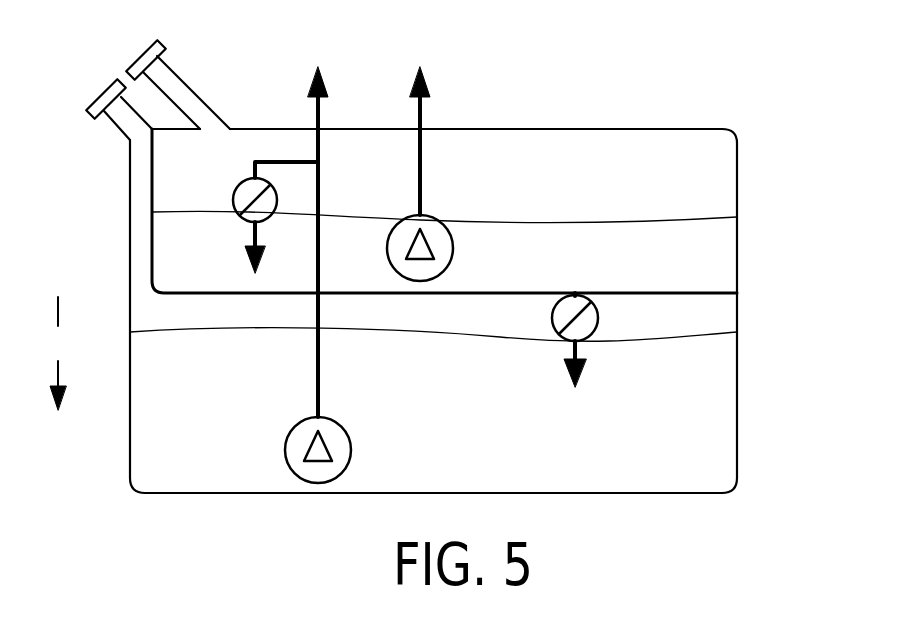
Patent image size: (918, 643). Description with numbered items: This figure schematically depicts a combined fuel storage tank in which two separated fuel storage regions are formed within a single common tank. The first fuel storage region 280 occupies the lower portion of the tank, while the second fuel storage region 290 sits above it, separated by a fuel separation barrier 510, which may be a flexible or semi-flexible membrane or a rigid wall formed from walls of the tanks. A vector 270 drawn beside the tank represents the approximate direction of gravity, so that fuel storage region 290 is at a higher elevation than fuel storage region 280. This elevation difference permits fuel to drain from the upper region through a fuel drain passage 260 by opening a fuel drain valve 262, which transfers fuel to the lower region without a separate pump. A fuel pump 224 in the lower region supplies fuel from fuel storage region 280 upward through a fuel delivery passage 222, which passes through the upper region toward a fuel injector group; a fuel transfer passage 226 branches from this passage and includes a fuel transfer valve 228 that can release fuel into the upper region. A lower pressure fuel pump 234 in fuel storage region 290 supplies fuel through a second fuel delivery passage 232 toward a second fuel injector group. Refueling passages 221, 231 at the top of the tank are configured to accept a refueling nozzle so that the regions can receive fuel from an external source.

The second fuel storage region 290 is at (444, 211).
The first fuel storage region 280 is at (433, 385).
The refueling passage 221 is at (128, 123).
The refueling passage 231 is at (168, 78).
The fuel delivery passage 222 is at (330, 114).
The fuel pump 224 is at (310, 483).
The fuel transfer passage 226 is at (292, 158).
The fuel transfer valve 228 is at (238, 178).
The second fuel delivery passage 232 is at (432, 114).
The lower pressure fuel pump 234 is at (449, 231).
The fuel drain valve 262 is at (591, 306).
The fuel separation barrier 510 is at (673, 295).
The fuel drain passage 260 is at (583, 365).
The vector 270 is at (58, 353).